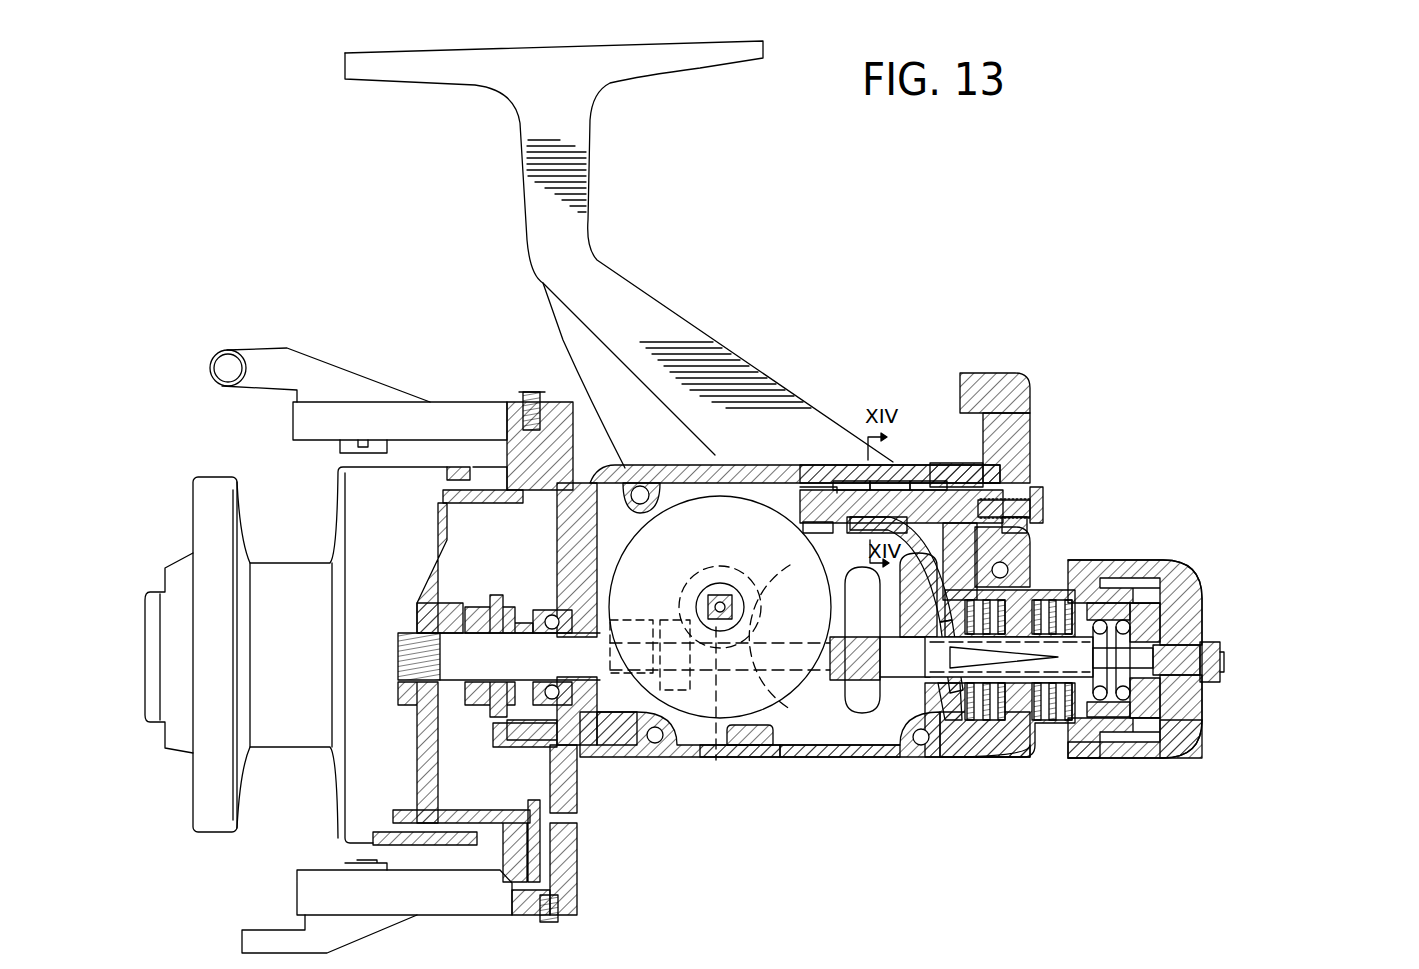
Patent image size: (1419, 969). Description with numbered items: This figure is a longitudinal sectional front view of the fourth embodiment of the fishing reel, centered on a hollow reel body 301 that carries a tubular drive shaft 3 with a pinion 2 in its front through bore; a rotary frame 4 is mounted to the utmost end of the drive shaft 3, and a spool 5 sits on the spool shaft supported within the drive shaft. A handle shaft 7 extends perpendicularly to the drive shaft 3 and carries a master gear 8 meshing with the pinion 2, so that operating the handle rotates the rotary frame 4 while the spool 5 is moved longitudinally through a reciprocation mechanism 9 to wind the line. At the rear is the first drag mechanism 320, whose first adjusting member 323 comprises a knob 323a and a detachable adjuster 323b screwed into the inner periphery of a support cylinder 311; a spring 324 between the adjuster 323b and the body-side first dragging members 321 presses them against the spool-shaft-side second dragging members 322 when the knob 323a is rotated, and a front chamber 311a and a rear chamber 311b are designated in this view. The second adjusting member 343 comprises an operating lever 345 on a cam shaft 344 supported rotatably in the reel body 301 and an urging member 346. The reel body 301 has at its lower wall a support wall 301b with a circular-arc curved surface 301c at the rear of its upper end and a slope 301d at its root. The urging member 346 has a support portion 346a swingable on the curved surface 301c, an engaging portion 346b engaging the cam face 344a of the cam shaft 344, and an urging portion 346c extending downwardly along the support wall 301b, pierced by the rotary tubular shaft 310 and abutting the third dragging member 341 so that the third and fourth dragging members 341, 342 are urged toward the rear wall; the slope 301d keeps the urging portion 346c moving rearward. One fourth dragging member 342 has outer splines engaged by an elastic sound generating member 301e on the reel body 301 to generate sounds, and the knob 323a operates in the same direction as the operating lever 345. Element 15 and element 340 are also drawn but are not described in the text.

The reel body 301 is at (662, 460).
The support wall 301b is at (880, 742).
The circular-arc curved surface 301c is at (850, 567).
The slope 301d is at (817, 480).
The elastic sound generating member 301e is at (822, 762).
The pinion 2 is at (620, 745).
The tubular drive shaft 3 is at (575, 707).
The rotary frame 4 is at (487, 490).
The spool 5 is at (297, 732).
The handle shaft 7 is at (710, 630).
The master gear 8 is at (667, 745).
The reciprocation mechanism 9 is at (847, 670).
The bearing support 15 is at (817, 742).
The rotary tubular shaft 310 is at (947, 757).
The support cylinder 311 is at (1160, 587).
The front chamber 311a is at (965, 753).
The rear chamber 311b is at (1107, 652).
The first drag mechanism 320 is at (1213, 613).
The first dragging members 321 is at (1098, 753).
The second dragging members 322 is at (1078, 755).
The first adjusting member 323 is at (1231, 659).
The knob 323a is at (1193, 700).
The adjuster 323b is at (1200, 730).
The spring 324 is at (1167, 753).
The clamp nut 340 is at (1040, 473).
The third dragging member 341 is at (1005, 722).
The fourth dragging member 342 is at (955, 700).
The second adjusting member 343 is at (1030, 433).
The cam shaft 344 is at (823, 480).
The cam face 344a is at (850, 487).
The operating lever 345 is at (1022, 410).
The urging member 346 is at (958, 360).
The support portion 346a is at (950, 480).
The engaging portion 346b is at (930, 480).
The urging portion 346c is at (917, 263).